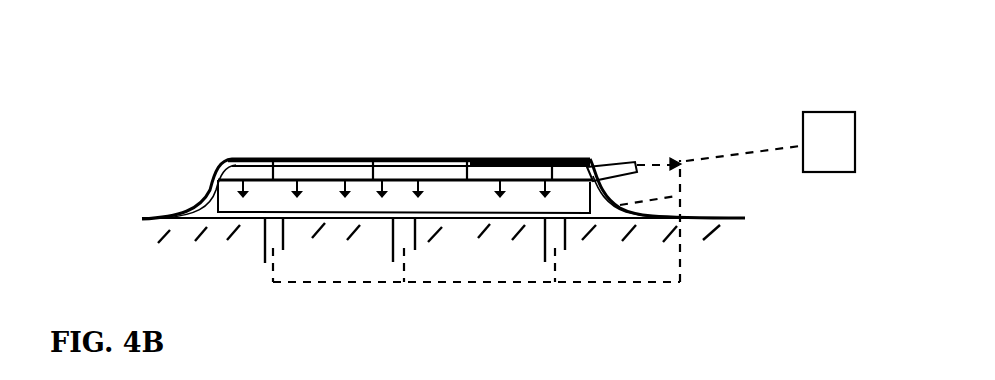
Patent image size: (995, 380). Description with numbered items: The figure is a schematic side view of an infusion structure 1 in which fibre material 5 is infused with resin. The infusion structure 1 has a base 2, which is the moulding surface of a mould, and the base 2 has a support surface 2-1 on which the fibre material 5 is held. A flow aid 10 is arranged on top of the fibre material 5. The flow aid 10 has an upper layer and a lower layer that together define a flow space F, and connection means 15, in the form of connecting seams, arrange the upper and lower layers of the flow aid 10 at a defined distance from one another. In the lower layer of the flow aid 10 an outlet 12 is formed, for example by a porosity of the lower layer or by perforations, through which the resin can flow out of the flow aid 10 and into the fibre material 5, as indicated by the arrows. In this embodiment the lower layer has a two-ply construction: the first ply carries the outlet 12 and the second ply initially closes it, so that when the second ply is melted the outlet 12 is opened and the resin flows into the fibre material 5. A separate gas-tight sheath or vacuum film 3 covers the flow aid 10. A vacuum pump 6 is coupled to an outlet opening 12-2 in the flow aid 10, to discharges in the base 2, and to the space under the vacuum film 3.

The infusion structure 1 is at (716, 76).
The base 2 is at (688, 233).
The support surface 2-1 is at (700, 219).
The gas-tight sheath or vacuum film 3 is at (523, 158).
The fibre material 5 is at (472, 195).
The vacuum pump 6 is at (737, 158).
The flow aid 10 is at (330, 163).
The outlet 12 is at (387, 184).
The outlet opening 12-2 is at (630, 165).
The connection means 15 is at (272, 166).
The flow space F is at (431, 172).